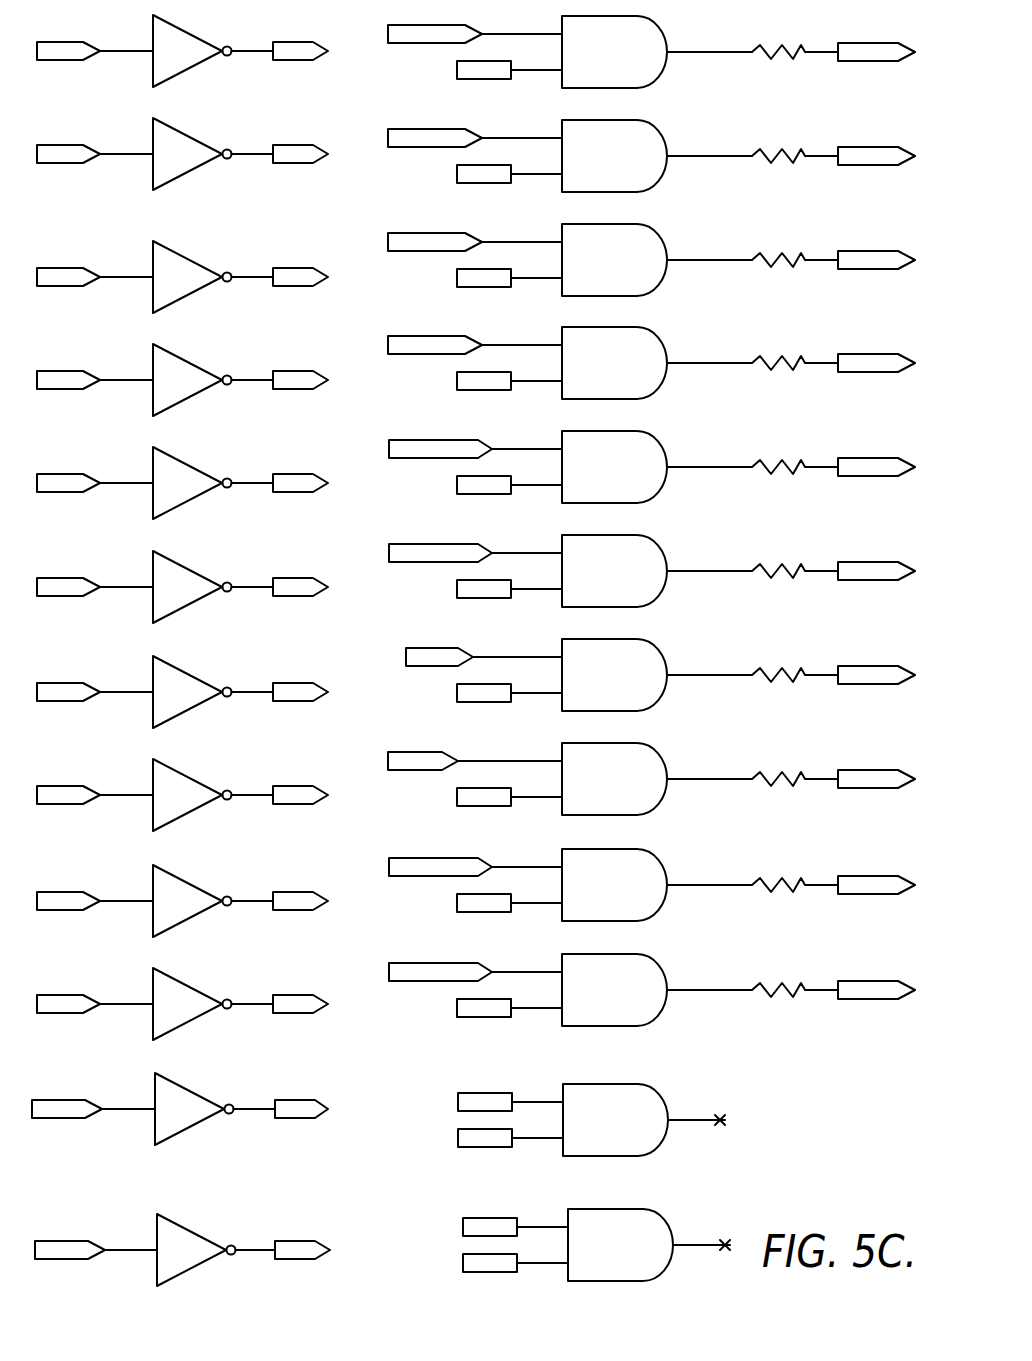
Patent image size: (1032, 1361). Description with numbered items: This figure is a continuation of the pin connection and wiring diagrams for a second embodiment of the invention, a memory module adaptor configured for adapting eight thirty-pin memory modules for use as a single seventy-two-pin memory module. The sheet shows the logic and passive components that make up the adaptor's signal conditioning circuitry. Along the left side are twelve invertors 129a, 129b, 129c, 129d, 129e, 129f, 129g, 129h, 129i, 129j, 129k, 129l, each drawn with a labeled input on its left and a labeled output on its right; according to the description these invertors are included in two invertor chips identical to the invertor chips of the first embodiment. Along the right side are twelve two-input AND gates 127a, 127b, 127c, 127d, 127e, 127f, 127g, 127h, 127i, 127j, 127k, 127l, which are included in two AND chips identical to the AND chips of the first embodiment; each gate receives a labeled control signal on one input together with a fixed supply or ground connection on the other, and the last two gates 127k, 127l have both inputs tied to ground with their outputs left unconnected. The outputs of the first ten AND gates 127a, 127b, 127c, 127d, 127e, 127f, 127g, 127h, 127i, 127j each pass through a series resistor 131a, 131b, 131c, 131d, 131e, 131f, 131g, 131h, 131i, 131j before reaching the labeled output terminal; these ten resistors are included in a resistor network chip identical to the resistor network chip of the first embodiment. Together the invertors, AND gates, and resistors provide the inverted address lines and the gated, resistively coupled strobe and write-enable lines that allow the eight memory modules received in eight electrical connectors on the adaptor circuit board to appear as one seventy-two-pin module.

The invertor 129a is at (177, 39).
The invertor 129b is at (175, 142).
The invertor 129c is at (178, 265).
The invertor 129d is at (180, 368).
The invertor 129e is at (179, 471).
The invertor 129f is at (182, 575).
The invertor 129g is at (185, 680).
The invertor 129h is at (182, 783).
The invertor 129i is at (183, 889).
The invertor 129j is at (181, 992).
The invertor 129k is at (183, 1097).
The invertor 129l is at (172, 1238).
The AND gate 127a is at (645, 40).
The AND gate 127b is at (640, 144).
The AND gate 127c is at (640, 248).
The AND gate 127d is at (653, 351).
The AND gate 127e is at (643, 455).
The AND gate 127f is at (650, 559).
The AND gate 127g is at (660, 663).
The AND gate 127h is at (648, 767).
The AND gate 127i is at (640, 873).
The AND gate 127j is at (648, 978).
The AND gate 127k is at (650, 1108).
The AND gate 127l is at (648, 1233).
The resistor 131a is at (786, 51).
The resistor 131b is at (786, 155).
The resistor 131c is at (786, 259).
The resistor 131d is at (786, 362).
The resistor 131e is at (786, 466).
The resistor 131f is at (786, 570).
The resistor 131g is at (786, 674).
The resistor 131h is at (786, 778).
The resistor 131i is at (786, 884).
The resistor 131j is at (786, 989).